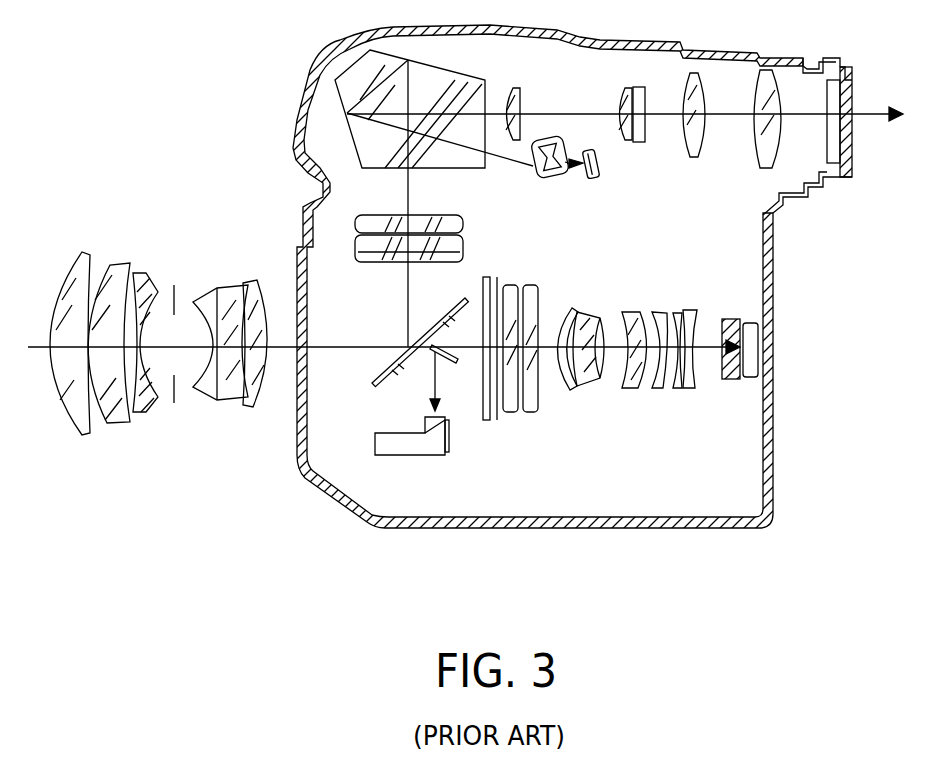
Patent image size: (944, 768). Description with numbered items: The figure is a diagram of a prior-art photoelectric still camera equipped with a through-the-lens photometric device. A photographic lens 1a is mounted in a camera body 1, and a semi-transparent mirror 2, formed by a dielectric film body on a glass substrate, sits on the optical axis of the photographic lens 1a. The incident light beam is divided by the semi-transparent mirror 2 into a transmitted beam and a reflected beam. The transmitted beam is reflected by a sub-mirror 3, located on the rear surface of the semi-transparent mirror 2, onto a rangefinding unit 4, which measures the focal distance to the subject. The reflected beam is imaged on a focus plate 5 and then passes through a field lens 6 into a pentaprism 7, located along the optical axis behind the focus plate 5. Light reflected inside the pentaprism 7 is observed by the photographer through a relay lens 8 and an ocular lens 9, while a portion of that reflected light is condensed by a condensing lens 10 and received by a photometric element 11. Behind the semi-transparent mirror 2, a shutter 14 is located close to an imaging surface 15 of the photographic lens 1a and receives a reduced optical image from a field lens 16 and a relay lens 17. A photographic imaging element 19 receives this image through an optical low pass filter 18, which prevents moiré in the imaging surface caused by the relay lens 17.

The camera body 1 is at (773, 450).
The photographic lens 1a is at (158, 405).
The semi-transparent mirror 2 is at (383, 368).
The sub-mirror 3 is at (446, 358).
The rangefinding unit 4 is at (417, 455).
The focus plate 5 is at (372, 262).
The field lens 6 is at (450, 233).
The pentaprism 7 is at (387, 167).
The relay lens 8 is at (620, 92).
The ocular lens 9 is at (757, 143).
The condensing lens 10 is at (555, 178).
The photometric element 11 is at (600, 160).
The shutter 14 is at (497, 420).
The imaging surface 15 is at (538, 400).
The field lens 16 is at (490, 277).
The relay lens 17 is at (630, 312).
The optical low pass filter 18 is at (733, 320).
The photographic imaging element 19 is at (750, 378).